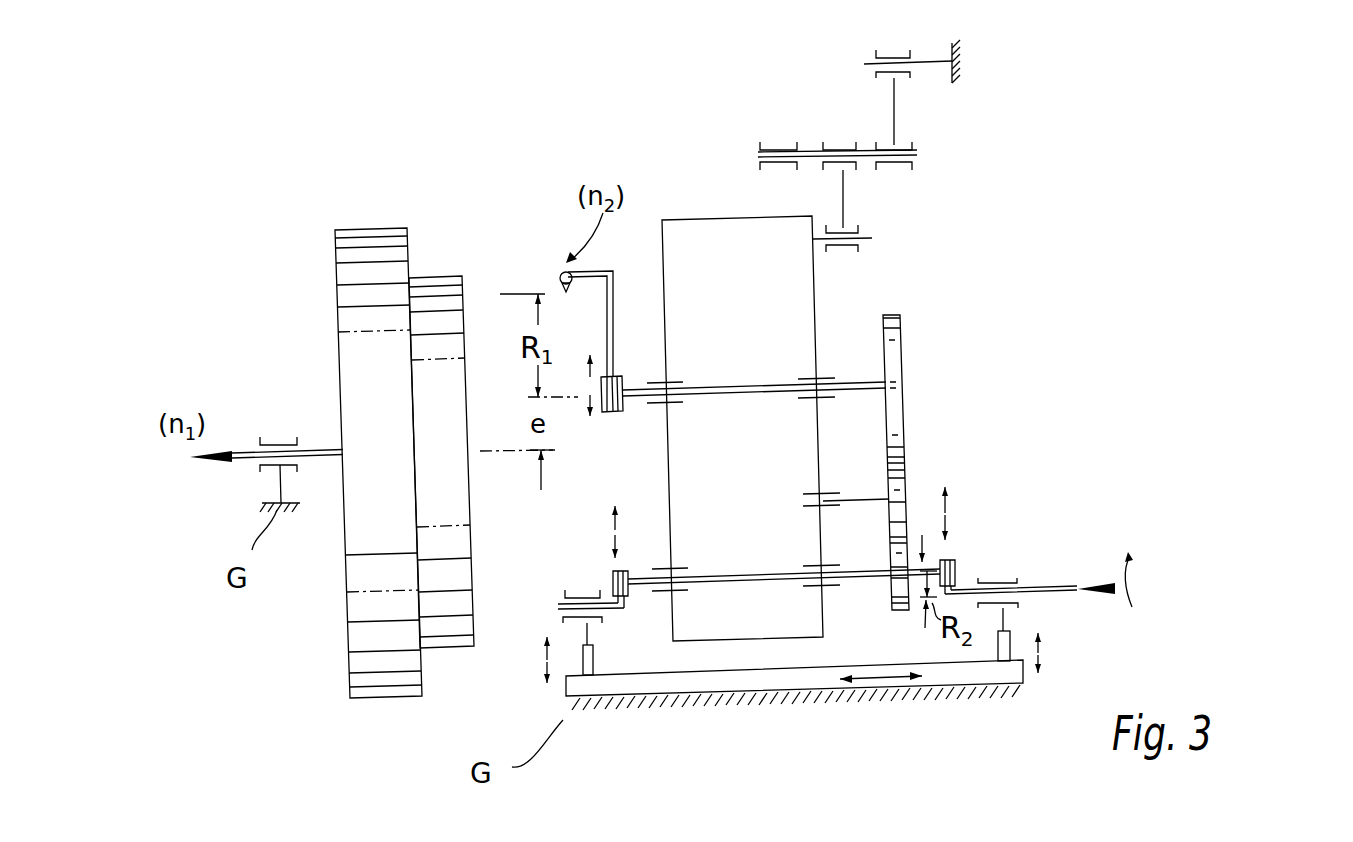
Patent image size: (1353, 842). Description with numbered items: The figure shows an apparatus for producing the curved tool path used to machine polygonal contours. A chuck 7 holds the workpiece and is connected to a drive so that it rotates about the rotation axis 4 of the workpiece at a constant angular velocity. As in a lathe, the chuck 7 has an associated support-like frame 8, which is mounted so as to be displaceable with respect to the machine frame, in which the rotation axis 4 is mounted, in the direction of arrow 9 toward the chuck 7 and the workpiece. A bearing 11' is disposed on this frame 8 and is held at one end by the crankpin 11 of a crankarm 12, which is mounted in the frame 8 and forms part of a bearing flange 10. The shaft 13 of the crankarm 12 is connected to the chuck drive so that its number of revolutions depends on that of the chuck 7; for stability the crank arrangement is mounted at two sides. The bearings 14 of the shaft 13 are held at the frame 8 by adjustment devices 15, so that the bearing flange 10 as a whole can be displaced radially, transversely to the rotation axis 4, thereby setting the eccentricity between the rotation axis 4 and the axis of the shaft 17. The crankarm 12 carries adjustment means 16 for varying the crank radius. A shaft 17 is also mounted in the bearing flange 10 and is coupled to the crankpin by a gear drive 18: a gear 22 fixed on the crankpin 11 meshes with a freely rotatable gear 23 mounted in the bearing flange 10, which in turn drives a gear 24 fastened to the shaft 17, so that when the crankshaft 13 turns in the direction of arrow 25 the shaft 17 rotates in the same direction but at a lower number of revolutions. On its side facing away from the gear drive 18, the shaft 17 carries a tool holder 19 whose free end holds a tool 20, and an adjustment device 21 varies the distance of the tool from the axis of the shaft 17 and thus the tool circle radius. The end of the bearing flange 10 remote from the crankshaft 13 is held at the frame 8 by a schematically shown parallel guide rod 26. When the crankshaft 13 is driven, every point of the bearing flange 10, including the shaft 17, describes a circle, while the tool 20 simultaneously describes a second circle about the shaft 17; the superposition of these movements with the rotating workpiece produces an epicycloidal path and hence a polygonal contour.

The rotation axis 4 is at (243, 449).
The chuck 7 is at (381, 240).
The frame 8 is at (975, 42).
The arrow 9 is at (890, 686).
The bearing flange 10 is at (693, 218).
The crankpin 11 is at (784, 551).
The bearing 11' is at (762, 547).
The crankarm 12 is at (627, 603).
The shaft 13 is at (560, 611).
The bearings 14 is at (575, 590).
The adjustment devices 15 is at (596, 657).
The adjustment means 16 is at (613, 572).
The shaft 17 is at (720, 388).
The gear drive 18 is at (1028, 306).
The tool holder 19 is at (611, 316).
The tool 20 is at (560, 278).
The adjustment device 21 is at (618, 414).
The gear 22 is at (888, 592).
The gear 23 is at (903, 472).
The gear 24 is at (900, 345).
The arrow 25 is at (1134, 575).
The parallel guide rod 26 is at (1000, 78).